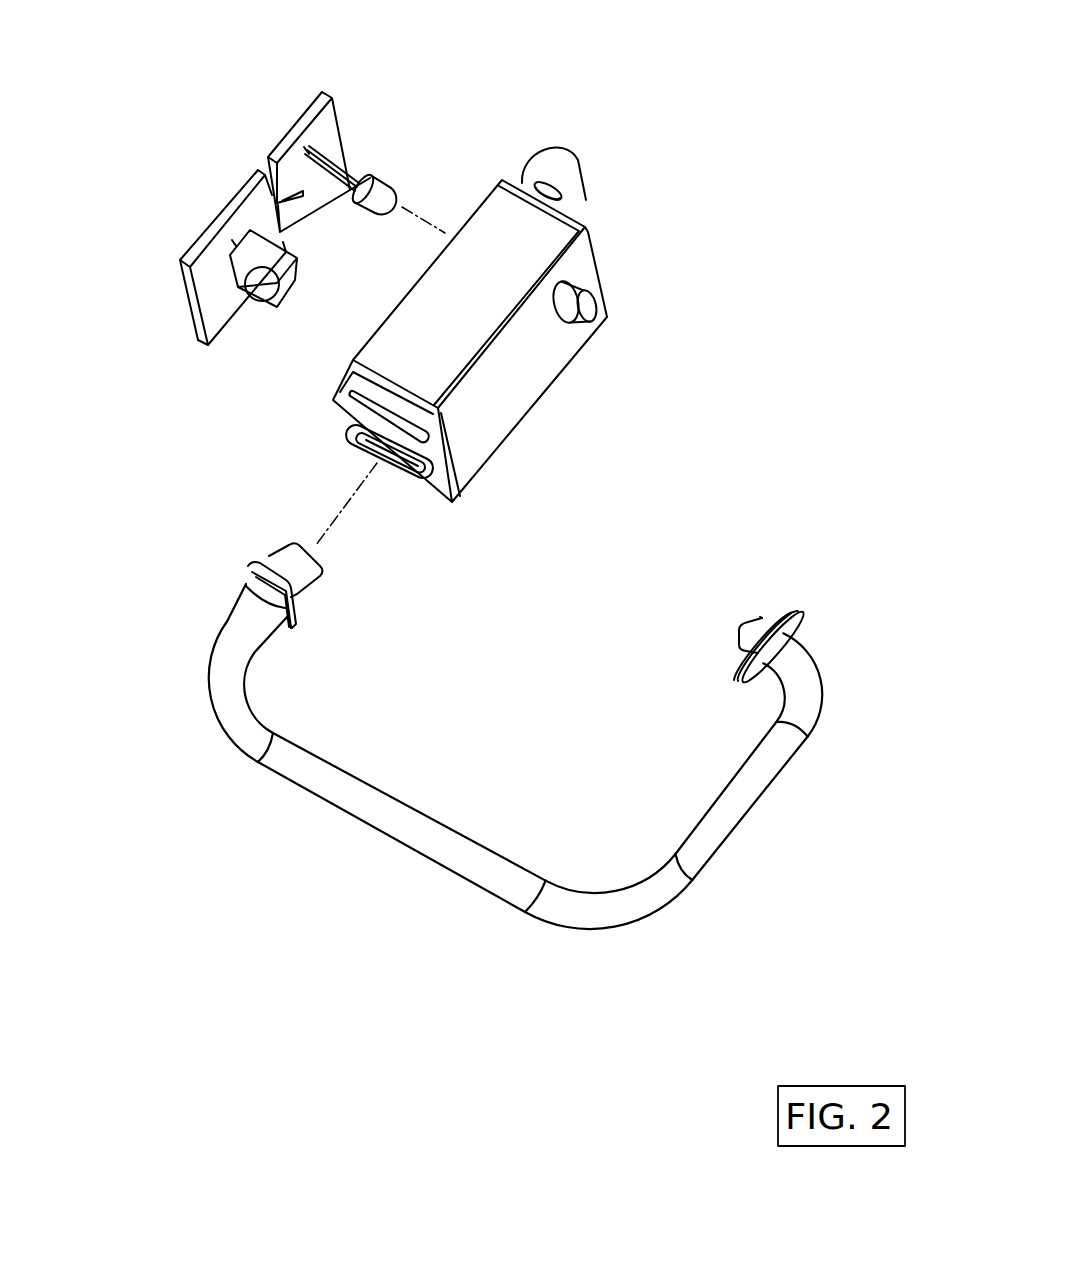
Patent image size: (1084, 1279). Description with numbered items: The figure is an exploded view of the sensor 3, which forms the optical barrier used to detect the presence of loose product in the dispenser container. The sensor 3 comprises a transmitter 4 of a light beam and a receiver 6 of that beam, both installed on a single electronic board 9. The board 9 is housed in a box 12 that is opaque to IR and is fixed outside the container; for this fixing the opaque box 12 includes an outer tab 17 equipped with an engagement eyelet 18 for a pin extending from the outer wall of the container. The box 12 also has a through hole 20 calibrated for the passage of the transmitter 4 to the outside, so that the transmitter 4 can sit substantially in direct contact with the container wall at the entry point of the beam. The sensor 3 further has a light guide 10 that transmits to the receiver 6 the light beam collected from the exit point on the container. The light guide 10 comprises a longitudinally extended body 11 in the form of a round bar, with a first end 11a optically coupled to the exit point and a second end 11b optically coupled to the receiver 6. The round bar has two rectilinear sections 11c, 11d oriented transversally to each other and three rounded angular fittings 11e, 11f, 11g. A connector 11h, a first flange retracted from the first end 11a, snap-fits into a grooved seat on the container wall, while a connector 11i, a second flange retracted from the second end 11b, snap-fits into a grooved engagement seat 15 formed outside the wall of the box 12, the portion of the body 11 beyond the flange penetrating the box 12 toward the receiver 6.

The sensor 3 is at (206, 221).
The transmitter 4 is at (388, 185).
The receiver 6 is at (263, 283).
The electronic board 9 is at (253, 205).
The light guide 10 is at (349, 822).
The longitudinally extended body 11 is at (522, 906).
The first end 11a is at (750, 624).
The second end 11b is at (306, 545).
The rectilinear section 11c is at (730, 795).
The rectilinear section 11d is at (475, 863).
The rounded angular fitting 11e is at (810, 677).
The rounded angular fitting 11f is at (607, 910).
The rounded angular fitting 11g is at (222, 693).
The connector 11h is at (792, 618).
The connector 11i is at (250, 582).
The box 12 is at (517, 243).
The grooved engagement seat 15 is at (378, 436).
The outer tab 17 is at (570, 170).
The engagement eyelet 18 is at (558, 194).
The through hole 20 is at (587, 308).